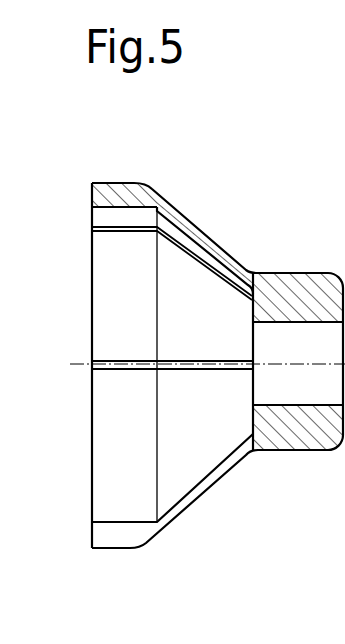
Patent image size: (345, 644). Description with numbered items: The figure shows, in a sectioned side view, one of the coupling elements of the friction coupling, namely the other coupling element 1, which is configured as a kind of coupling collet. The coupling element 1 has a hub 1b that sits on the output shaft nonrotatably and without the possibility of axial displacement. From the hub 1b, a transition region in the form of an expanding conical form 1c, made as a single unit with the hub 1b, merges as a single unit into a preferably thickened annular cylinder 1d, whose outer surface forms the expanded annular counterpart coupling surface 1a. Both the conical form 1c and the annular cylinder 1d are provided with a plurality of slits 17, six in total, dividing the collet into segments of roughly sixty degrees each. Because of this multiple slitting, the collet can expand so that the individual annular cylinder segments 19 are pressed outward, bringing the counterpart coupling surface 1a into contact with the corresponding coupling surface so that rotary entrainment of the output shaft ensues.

The coupling element 1 is at (186, 386).
The counterpart coupling surface 1a is at (119, 552).
The hub 1b is at (285, 435).
The conical form 1c is at (218, 248).
The annular cylinder 1d is at (108, 196).
The slits 17 is at (116, 230).
The annular cylinder segments 19 is at (110, 293).